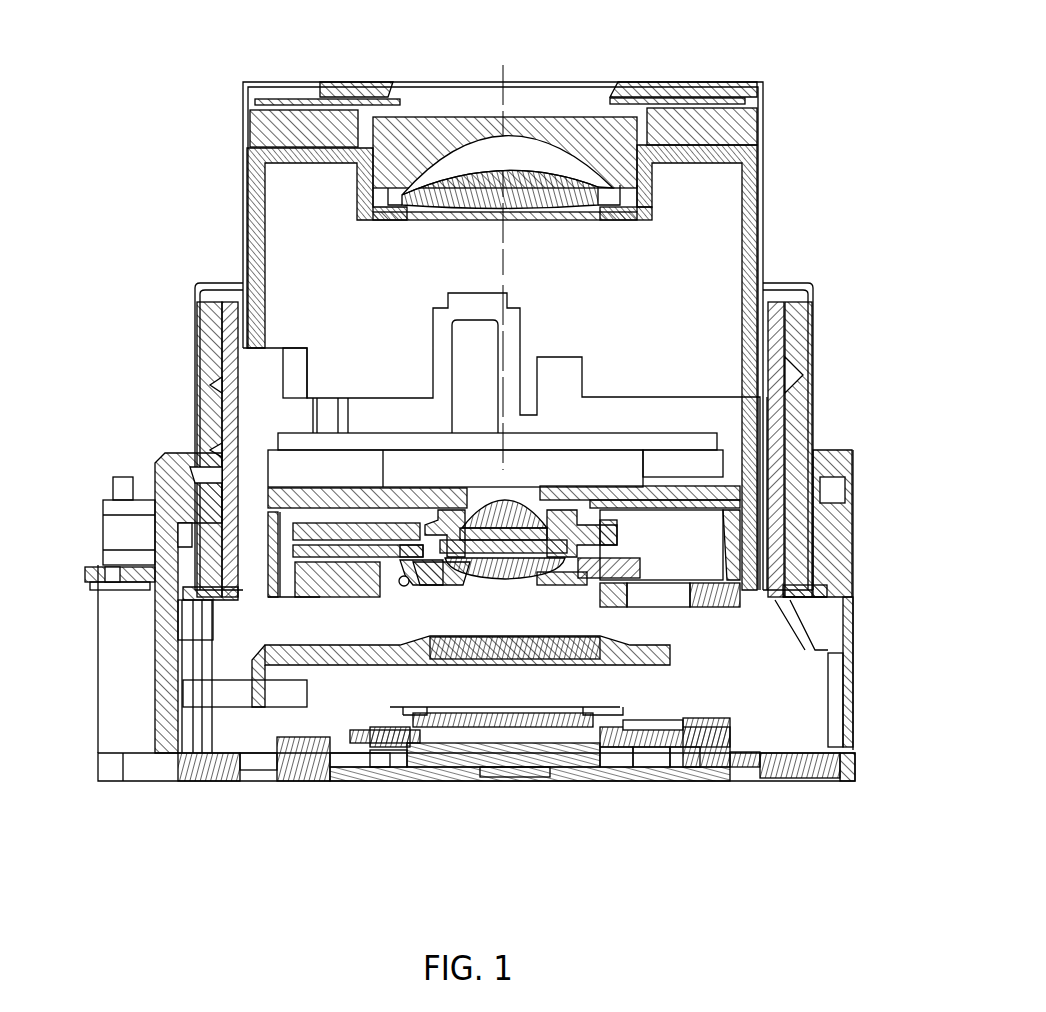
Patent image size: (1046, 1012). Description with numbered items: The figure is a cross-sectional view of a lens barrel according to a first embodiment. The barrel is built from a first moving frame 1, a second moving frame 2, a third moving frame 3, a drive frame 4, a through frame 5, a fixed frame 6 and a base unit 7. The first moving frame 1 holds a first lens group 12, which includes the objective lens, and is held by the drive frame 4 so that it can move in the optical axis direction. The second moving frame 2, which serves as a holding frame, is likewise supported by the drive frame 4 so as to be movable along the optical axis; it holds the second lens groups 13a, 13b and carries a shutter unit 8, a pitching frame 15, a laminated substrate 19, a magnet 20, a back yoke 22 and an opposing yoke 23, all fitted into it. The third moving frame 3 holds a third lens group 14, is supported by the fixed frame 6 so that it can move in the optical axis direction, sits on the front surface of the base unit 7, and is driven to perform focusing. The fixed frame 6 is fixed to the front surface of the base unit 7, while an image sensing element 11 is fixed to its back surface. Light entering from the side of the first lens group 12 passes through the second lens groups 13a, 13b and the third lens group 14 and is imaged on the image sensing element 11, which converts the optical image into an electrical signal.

The first moving frame 1 is at (763, 191).
The second moving frame 2 is at (740, 527).
The third moving frame 3 is at (670, 653).
The drive frame 4 is at (810, 328).
The through frame 5 is at (797, 380).
The fixed frame 6 is at (832, 449).
The base unit 7 is at (853, 768).
The shutter unit 8 is at (300, 478).
The image sensing element 11 is at (497, 783).
The first lens group 12 is at (444, 184).
The second lens group 13a is at (522, 580).
The second lens group 13b is at (468, 560).
The third lens group 14 is at (482, 660).
The pitching frame 15 is at (600, 535).
The laminated substrate 19 is at (85, 578).
The magnet 20 is at (390, 550).
The back yoke 22 is at (330, 612).
The opposing yoke 23 is at (268, 528).